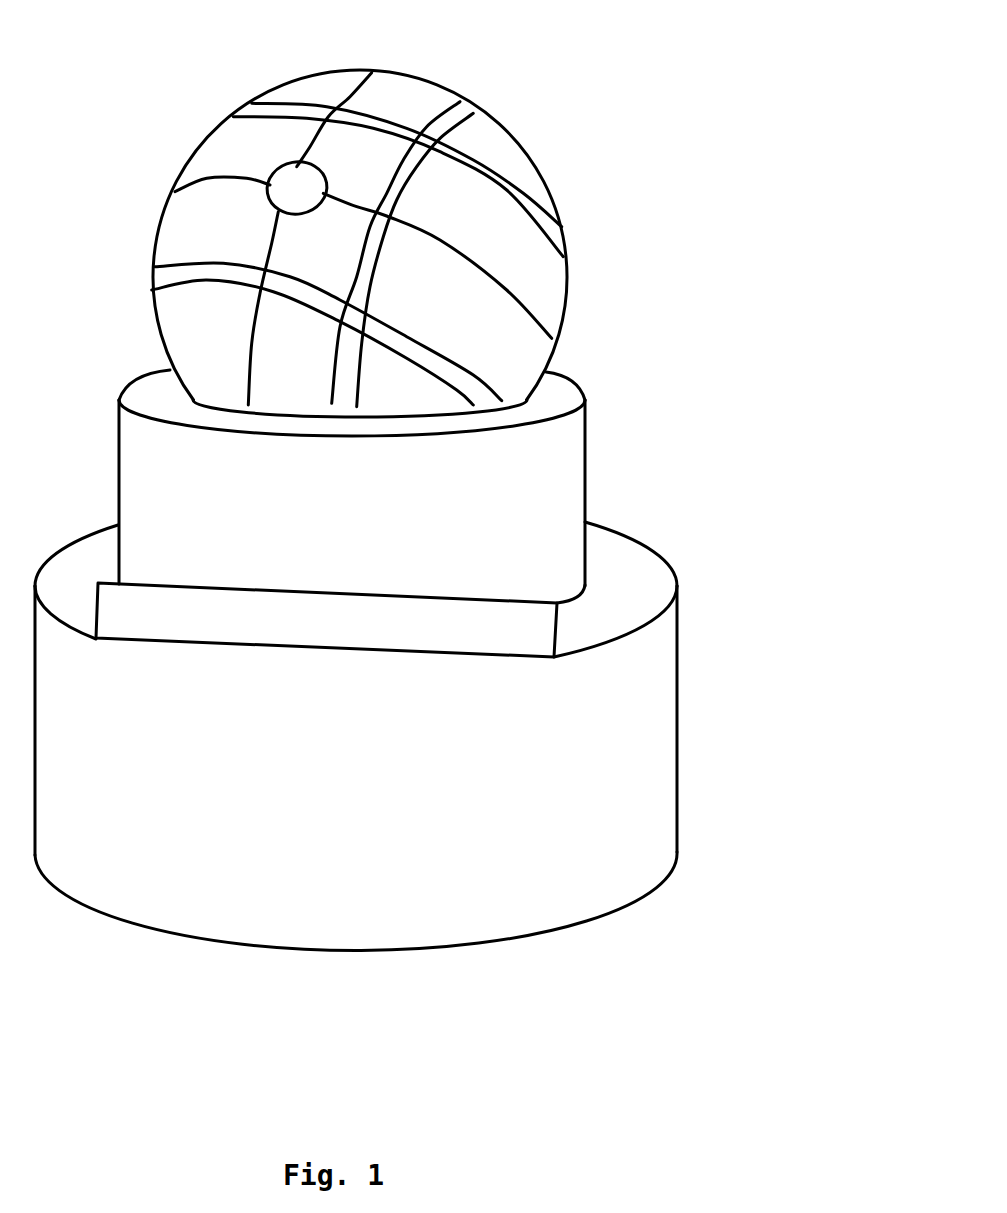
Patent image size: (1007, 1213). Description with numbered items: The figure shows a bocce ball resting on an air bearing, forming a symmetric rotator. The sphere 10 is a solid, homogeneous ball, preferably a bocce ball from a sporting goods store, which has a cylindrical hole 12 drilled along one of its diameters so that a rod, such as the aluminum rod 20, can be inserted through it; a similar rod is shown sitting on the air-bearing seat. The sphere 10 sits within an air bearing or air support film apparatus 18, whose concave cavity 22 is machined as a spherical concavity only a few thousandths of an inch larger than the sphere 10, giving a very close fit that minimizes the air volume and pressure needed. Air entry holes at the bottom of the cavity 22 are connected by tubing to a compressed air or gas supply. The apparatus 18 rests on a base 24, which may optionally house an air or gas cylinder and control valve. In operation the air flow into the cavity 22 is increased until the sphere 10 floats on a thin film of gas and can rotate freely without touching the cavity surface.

The sphere 10 is at (538, 176).
The cylindrical hole 12 is at (278, 175).
The air bearing or air support film apparatus 18 is at (583, 488).
The concave cavity 22 is at (528, 399).
The aluminum rod 20 is at (555, 625).
The base 24 is at (677, 773).